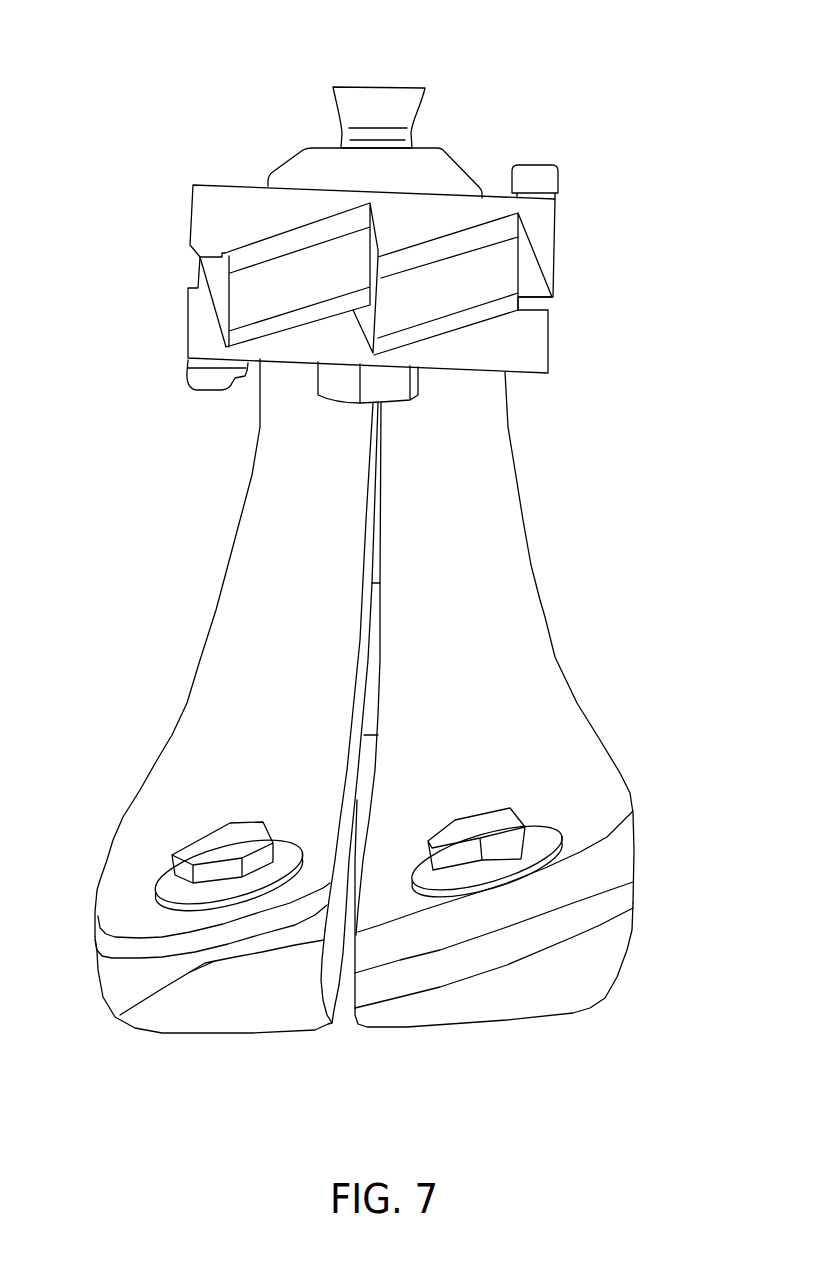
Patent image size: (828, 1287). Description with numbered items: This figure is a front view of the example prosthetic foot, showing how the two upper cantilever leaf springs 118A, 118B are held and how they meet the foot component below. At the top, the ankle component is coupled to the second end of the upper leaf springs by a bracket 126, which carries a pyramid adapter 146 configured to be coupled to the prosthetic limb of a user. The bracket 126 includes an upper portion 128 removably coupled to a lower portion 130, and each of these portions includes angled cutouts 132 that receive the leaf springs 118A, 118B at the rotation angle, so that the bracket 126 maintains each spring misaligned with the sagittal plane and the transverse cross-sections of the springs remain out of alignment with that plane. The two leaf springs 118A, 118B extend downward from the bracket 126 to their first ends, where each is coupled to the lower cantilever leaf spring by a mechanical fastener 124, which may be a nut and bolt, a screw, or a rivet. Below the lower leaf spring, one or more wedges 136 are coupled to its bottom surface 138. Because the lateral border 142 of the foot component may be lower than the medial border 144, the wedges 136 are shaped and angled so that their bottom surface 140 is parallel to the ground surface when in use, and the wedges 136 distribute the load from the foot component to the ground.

The leaf spring 118A is at (220, 658).
The leaf spring 118B is at (541, 663).
The mechanical fastener 124 is at (190, 850).
The bracket 126 is at (341, 242).
The upper portion 128 is at (198, 207).
The lower portion 130 is at (195, 327).
The angled cutouts 132 is at (210, 272).
The wedges 136 is at (370, 959).
The bottom surface 138 is at (199, 979).
The bottom surface 140 is at (391, 1044).
The lateral border 142 is at (101, 996).
The medial border 144 is at (645, 909).
The pyramid adapter 146 is at (407, 87).